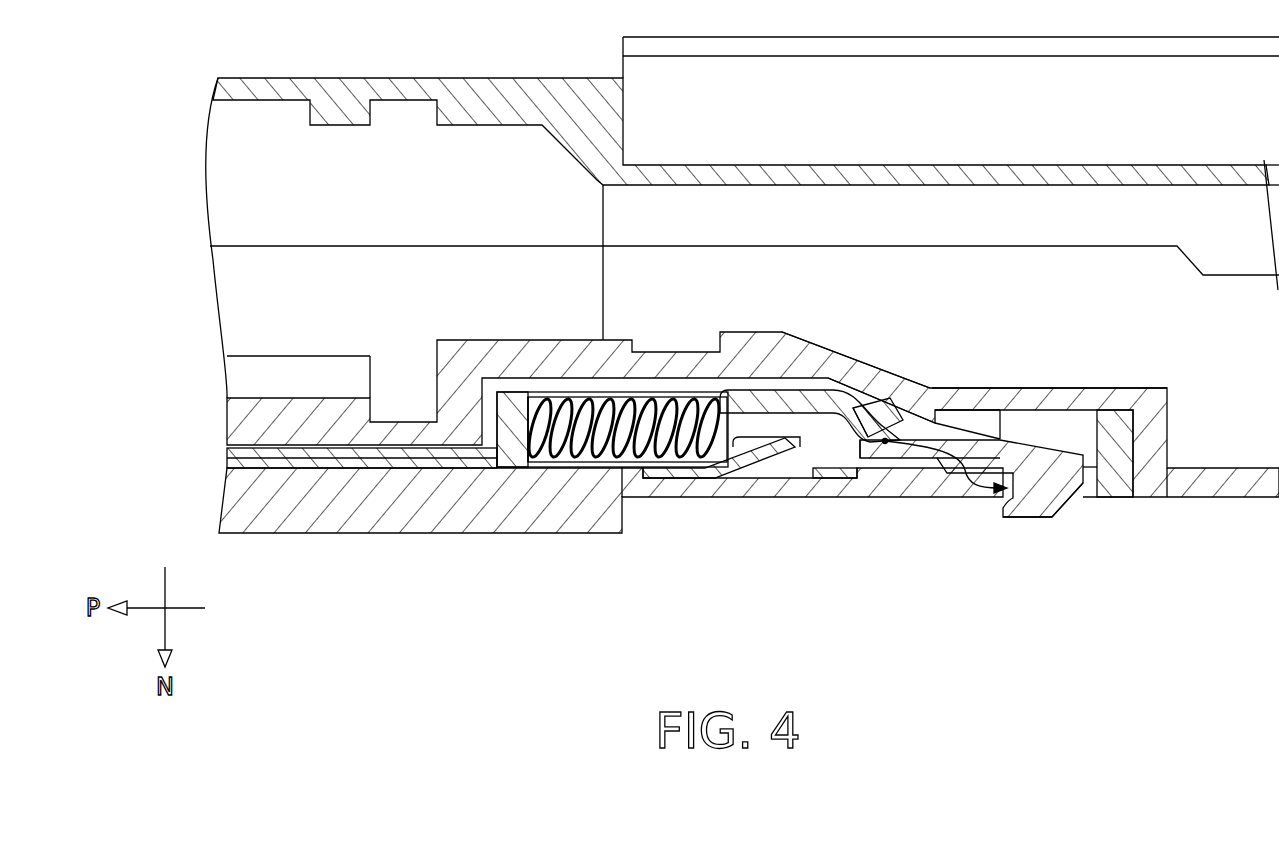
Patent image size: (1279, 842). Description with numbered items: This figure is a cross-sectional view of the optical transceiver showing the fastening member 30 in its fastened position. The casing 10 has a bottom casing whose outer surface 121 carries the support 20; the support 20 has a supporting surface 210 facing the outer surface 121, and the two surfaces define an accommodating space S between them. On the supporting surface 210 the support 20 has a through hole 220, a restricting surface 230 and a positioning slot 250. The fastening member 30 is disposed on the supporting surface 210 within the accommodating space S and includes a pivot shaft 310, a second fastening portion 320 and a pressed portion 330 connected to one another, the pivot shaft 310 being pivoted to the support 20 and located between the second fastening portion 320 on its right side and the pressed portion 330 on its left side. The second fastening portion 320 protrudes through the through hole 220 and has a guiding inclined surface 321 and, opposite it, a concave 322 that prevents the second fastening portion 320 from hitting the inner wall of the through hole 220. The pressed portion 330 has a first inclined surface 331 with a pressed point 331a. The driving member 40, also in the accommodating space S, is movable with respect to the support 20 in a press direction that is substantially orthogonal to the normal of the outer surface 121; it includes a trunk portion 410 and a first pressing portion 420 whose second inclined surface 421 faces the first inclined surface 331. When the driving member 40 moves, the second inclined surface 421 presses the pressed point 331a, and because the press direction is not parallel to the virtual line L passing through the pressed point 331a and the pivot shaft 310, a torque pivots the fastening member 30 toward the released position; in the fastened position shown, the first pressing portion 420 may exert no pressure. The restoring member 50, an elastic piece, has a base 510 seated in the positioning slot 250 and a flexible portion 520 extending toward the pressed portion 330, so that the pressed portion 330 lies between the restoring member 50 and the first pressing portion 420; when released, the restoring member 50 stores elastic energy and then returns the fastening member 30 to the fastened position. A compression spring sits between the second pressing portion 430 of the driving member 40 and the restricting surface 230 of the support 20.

The casing 10 is at (742, 217).
The support 20 is at (453, 533).
The through hole 220 is at (1092, 493).
The outer surface 121 is at (1058, 425).
The first pressing portion 420 is at (927, 392).
The second inclined surface 421 is at (853, 460).
The concave 322 is at (965, 420).
The driving member 40 is at (228, 456).
The trunk portion 410 is at (325, 455).
The supporting surface 210 is at (590, 465).
The restricting surface 230 is at (546, 465).
The accommodating space S is at (552, 387).
The restoring member 50 is at (750, 521).
The base 510 is at (690, 472).
The flexible portion 520 is at (773, 455).
The positioning slot 250 is at (650, 478).
The second pressing portion 430 is at (716, 390).
The first inclined surface 331 is at (832, 405).
The pressed point 331a is at (850, 412).
The virtual line L is at (879, 436).
The fastening member 30 is at (977, 542).
The pressed portion 330 is at (842, 478).
The pivot shaft 310 is at (935, 445).
The second fastening portion 320 is at (1047, 512).
The guiding inclined surface 321 is at (1096, 532).